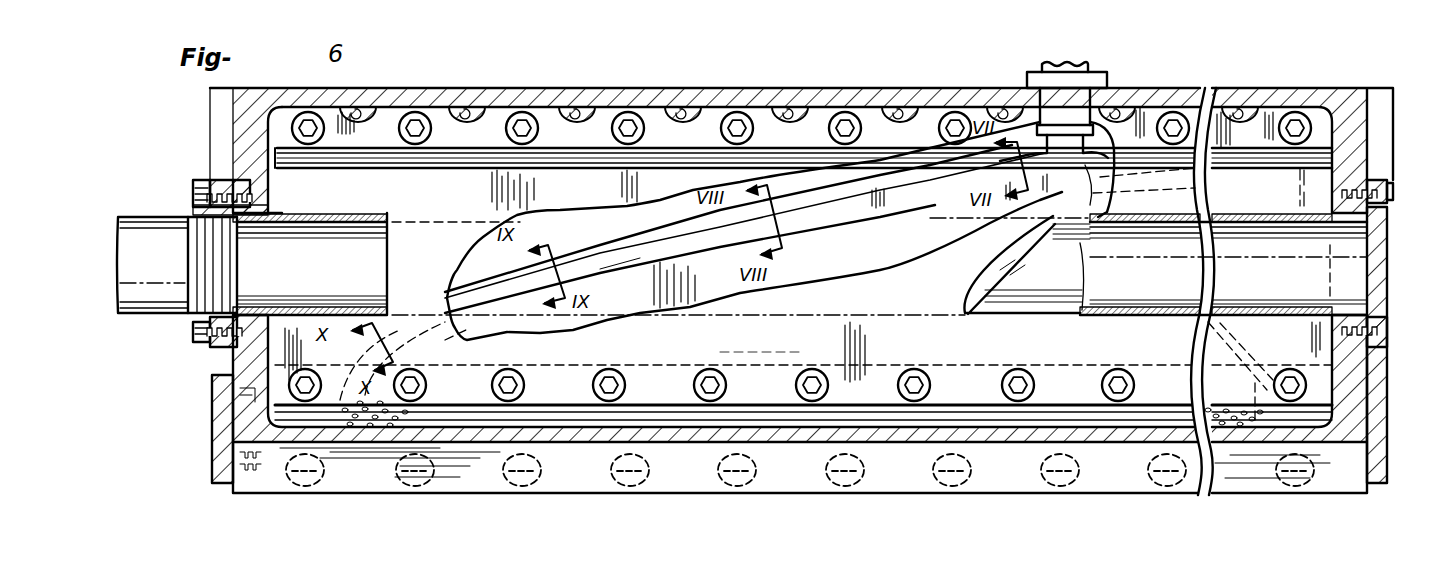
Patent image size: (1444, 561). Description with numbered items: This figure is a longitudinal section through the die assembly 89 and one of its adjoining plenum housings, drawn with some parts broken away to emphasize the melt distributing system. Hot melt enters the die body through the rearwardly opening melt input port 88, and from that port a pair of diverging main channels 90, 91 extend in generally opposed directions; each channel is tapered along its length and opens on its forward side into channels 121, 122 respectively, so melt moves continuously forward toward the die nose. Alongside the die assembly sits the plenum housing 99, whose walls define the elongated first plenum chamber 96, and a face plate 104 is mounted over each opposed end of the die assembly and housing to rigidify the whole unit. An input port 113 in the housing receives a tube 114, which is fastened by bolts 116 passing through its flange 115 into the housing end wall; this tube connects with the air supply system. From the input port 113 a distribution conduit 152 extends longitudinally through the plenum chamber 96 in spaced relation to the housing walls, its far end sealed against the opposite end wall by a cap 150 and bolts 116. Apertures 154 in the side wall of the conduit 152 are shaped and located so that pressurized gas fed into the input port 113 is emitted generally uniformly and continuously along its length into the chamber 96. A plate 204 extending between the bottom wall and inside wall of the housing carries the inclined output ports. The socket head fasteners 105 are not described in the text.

The melt input port 88 is at (1058, 158).
The die assembly 89 is at (662, 84).
The main channel 90 is at (938, 191).
The main channel 91 is at (1144, 192).
The first plenum chamber 96 is at (770, 350).
The plenum housing 99 is at (1285, 86).
The face plate 104 is at (224, 485).
The socket head bolts 105 is at (724, 128).
The input port 113 is at (262, 290).
The tube 114 is at (150, 308).
The flange 115 is at (222, 183).
The bolts 116 is at (208, 347).
The channel 121 is at (640, 301).
The channel 122 is at (1090, 186).
The cap 150 is at (1378, 180).
The distribution conduit 152 is at (1098, 316).
The apertures 154 is at (372, 214).
The plate 204 is at (441, 408).